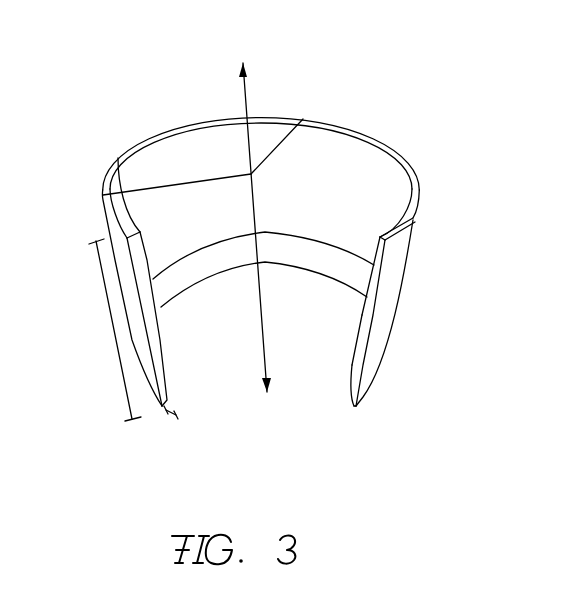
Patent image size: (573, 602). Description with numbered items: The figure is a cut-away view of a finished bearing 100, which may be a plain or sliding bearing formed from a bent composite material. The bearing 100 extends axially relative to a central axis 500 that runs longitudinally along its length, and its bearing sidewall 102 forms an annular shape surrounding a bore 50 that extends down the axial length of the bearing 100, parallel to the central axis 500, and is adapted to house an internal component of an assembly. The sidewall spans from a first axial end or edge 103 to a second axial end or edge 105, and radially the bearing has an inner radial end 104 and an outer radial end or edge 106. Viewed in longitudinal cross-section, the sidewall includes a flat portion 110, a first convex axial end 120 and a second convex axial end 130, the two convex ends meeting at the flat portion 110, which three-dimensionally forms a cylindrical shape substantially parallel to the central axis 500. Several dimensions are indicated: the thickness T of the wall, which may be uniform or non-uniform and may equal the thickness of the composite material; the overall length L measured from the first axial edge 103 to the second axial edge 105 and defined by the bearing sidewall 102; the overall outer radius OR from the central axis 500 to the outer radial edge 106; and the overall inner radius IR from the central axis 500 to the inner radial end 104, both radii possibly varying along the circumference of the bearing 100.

The bearing 100 is at (399, 47).
The bearing sidewall 102 is at (364, 133).
The first axial end or edge 103 is at (415, 221).
The inner radial end 104 is at (368, 285).
The second axial end or edge 105 is at (355, 409).
The outer radial end or edge 106 is at (386, 256).
The flat portion 110 is at (358, 322).
The first convex axial end 120 is at (378, 242).
The second convex axial end 130 is at (350, 393).
The bore 50 is at (263, 281).
The central axis 500 is at (246, 90).
The overall outer radius OR is at (118, 191).
The overall inner radius IR is at (281, 138).
The overall length L is at (114, 336).
The thickness T is at (173, 418).